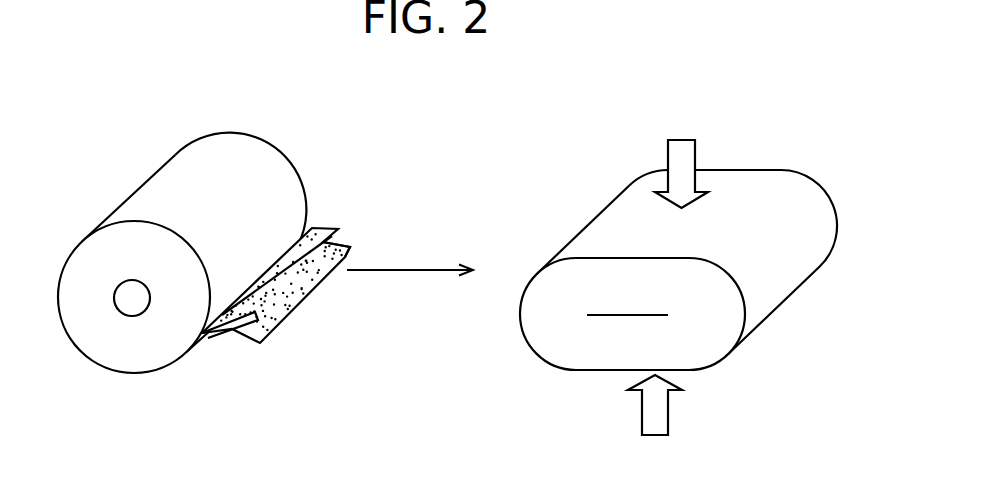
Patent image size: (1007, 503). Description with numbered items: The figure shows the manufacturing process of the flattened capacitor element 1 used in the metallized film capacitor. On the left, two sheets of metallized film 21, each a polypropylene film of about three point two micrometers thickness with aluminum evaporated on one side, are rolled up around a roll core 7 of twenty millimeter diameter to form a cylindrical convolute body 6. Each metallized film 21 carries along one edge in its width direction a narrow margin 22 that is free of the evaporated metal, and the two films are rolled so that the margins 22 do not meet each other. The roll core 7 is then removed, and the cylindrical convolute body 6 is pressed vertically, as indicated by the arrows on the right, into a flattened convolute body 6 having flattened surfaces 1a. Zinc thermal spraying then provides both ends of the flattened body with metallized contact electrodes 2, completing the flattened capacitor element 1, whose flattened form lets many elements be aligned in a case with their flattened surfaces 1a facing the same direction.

The flattened capacitor element 1 is at (688, 272).
The flattened surface 1a is at (740, 205).
The metallized contact electrode 2 is at (558, 352).
The cylindrical convolute body 6 is at (252, 162).
The roll core 7 is at (128, 305).
The metallized film 21 is at (300, 272).
The margin 22 is at (336, 242).